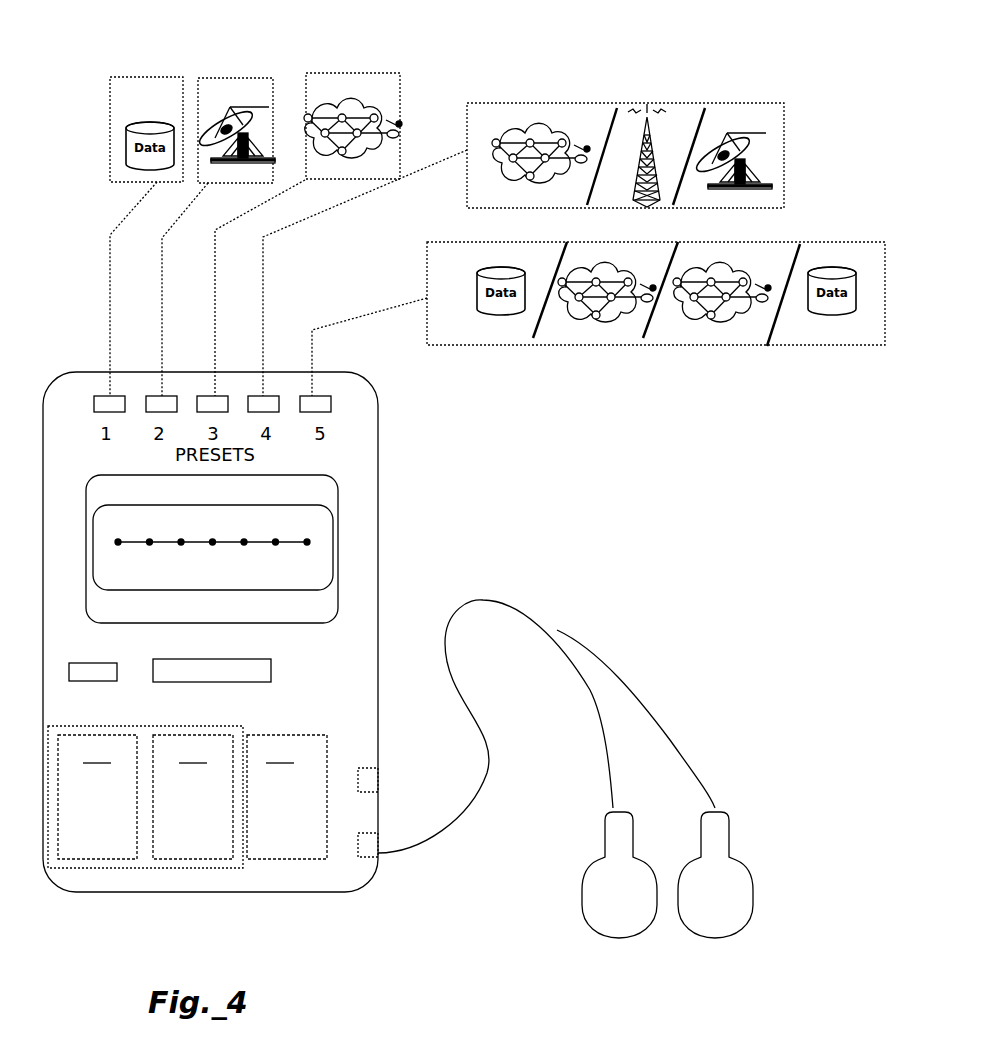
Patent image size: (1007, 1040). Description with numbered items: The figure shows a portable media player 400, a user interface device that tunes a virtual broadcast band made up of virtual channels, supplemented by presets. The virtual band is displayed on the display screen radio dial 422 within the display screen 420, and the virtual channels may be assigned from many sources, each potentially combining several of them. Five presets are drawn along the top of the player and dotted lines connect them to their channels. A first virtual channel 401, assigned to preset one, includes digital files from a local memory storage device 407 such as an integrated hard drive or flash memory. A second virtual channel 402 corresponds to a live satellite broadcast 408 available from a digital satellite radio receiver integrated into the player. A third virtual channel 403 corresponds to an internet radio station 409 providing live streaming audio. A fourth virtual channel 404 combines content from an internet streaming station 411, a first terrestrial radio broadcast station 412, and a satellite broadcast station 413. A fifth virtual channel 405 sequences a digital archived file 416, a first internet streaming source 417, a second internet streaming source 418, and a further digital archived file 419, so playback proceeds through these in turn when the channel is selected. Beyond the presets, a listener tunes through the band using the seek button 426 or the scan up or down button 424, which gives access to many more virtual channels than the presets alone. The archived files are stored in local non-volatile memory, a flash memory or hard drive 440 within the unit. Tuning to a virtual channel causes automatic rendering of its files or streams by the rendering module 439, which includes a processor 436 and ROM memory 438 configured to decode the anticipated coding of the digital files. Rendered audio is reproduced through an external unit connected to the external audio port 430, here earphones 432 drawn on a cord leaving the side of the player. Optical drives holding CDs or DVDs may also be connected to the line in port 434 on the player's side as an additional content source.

The portable media player 400 is at (418, 511).
The first virtual channel 401 is at (135, 73).
The second virtual channel 402 is at (205, 78).
The third virtual channel 403 is at (318, 70).
The fourth virtual channel 404 is at (527, 103).
The fifth virtual channel 405 is at (787, 228).
The local memory storage device 407 is at (128, 153).
The live satellite broadcast 408 is at (250, 110).
The internet radio station 409 is at (358, 118).
The internet streaming station 411 is at (560, 140).
The first terrestrial radio broadcast station 412 is at (670, 125).
The satellite broadcast station 413 is at (747, 130).
The digital archived file 416 is at (503, 318).
The first internet streaming source 417 is at (613, 320).
The second internet streaming source 418 is at (732, 322).
The digital archived file 419 is at (838, 315).
The display screen 420 is at (315, 482).
The display screen radio dial 422 is at (307, 542).
The scan up or down button 424 is at (247, 675).
The seek button 426 is at (108, 670).
The external audio port 430 is at (378, 857).
The earphones 432 is at (593, 927).
The line in port 434 is at (372, 786).
The processor 436 is at (97, 797).
The ROM memory 438 is at (193, 797).
The rendering module 439 is at (88, 868).
The hard drive 440 is at (287, 797).